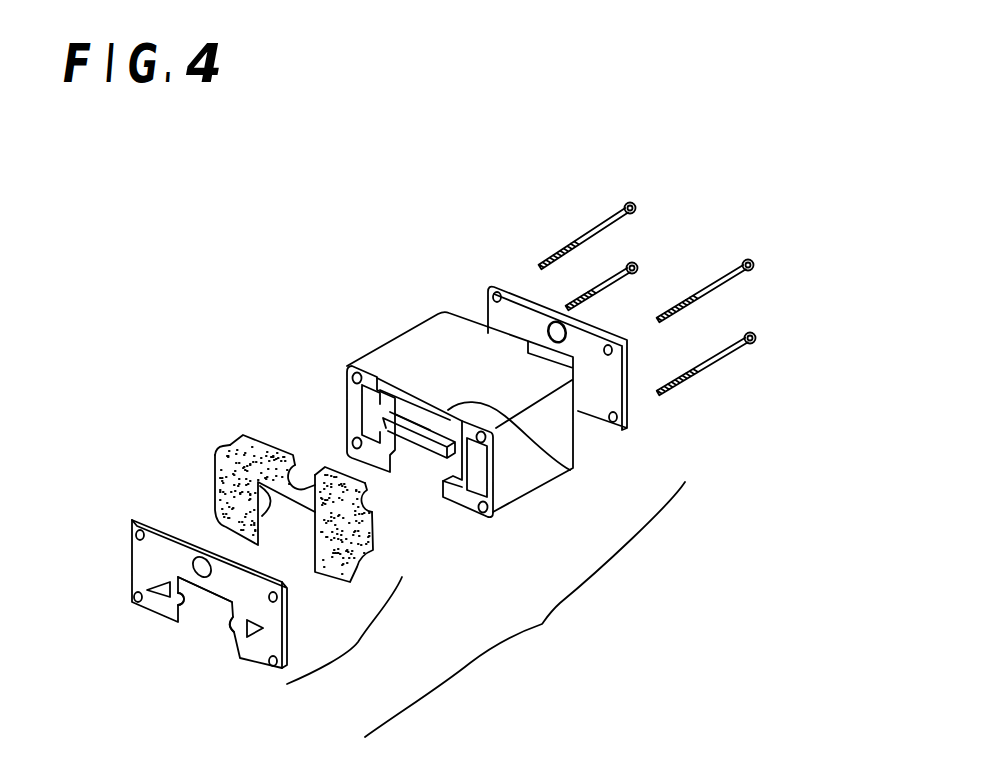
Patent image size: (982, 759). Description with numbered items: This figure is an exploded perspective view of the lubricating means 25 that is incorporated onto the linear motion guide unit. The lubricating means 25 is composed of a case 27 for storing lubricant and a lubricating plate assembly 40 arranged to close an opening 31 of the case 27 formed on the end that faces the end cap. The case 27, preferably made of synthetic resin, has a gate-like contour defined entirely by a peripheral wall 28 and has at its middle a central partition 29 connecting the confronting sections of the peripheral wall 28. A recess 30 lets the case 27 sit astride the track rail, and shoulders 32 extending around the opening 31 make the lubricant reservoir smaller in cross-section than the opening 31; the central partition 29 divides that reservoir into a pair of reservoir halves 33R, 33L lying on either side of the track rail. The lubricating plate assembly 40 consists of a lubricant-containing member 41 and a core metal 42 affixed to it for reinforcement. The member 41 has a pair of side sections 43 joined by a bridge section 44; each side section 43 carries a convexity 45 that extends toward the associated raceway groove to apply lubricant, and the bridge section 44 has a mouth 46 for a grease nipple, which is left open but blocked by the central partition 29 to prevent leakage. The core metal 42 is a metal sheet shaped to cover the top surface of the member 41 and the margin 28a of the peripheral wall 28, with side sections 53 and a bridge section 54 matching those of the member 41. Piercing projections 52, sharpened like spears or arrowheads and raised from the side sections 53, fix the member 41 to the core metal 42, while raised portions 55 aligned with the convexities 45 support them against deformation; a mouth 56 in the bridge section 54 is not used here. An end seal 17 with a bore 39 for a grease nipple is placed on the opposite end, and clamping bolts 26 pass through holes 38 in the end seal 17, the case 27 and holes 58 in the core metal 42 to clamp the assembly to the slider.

The end seal 17 is at (518, 296).
The lubricating means 25 is at (525, 609).
The clamping bolts 26 is at (607, 223).
The case 27 is at (448, 311).
The peripheral wall 28 is at (508, 472).
The margin of the peripheral wall 28a is at (571, 469).
The central partition 29 is at (423, 410).
The recess 30 is at (425, 460).
The opening 31 is at (356, 415).
The shoulders 32 is at (383, 397).
The reservoir half 33R is at (379, 395).
The reservoir half 33L is at (488, 470).
The holes 38 is at (498, 286).
The bore 39 is at (563, 332).
The lubricating plate assembly 40 is at (344, 630).
The lubricant-containing member 41 is at (224, 441).
The core metal 42 is at (128, 554).
The side sections 43 is at (215, 477).
The bridge section 44 is at (258, 462).
The convexities 45 is at (280, 503).
The mouth 46 is at (296, 470).
The piercing projections 52 is at (168, 582).
The side sections 53 is at (135, 575).
The bridge section 54 is at (223, 578).
The raised portion 55 is at (184, 607).
The mouth 56 is at (198, 556).
The holes 58 is at (140, 530).